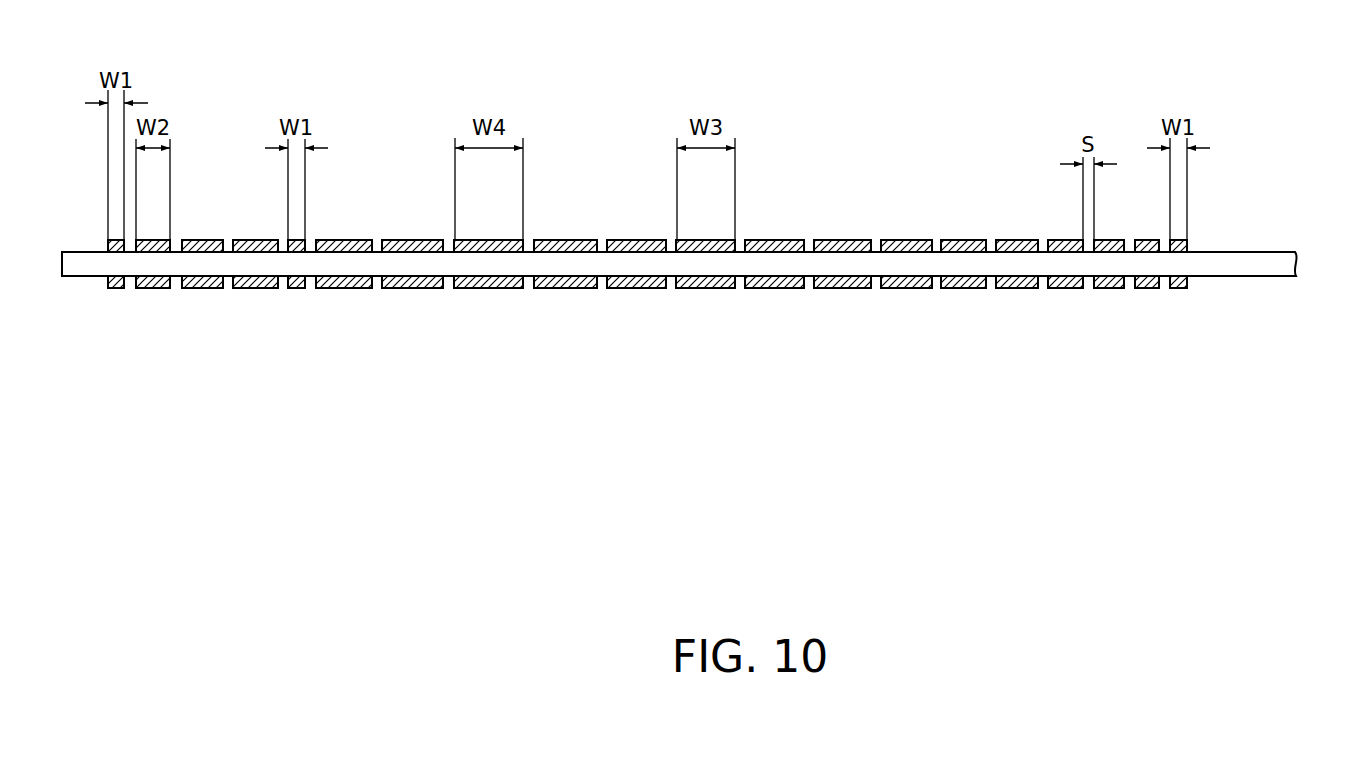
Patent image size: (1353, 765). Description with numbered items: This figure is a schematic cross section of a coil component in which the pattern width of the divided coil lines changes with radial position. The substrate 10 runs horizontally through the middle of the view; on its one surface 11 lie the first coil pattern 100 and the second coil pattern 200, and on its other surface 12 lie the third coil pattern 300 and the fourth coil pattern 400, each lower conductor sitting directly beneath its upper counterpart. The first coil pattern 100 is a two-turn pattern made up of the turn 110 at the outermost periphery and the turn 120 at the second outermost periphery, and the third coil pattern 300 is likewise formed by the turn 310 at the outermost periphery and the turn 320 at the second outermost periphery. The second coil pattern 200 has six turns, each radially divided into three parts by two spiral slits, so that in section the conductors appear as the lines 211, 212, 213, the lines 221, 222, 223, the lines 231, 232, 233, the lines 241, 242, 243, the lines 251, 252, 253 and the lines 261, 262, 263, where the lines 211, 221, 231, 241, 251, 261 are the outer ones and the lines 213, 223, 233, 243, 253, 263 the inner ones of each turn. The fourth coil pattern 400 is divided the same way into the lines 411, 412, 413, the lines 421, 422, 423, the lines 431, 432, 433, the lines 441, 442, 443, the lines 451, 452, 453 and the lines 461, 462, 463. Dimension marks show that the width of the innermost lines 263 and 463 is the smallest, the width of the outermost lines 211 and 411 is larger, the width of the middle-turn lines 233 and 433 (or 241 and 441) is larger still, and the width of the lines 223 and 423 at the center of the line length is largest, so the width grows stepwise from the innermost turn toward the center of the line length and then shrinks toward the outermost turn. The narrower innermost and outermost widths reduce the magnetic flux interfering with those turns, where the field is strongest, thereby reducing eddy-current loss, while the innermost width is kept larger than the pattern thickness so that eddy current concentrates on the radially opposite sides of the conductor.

The substrate 10 is at (1296, 264).
The one surface 11 is at (1268, 252).
The other surface 12 is at (1268, 276).
The first coil pattern 100 is at (647, 169).
The second coil pattern 200 is at (933, 163).
The third coil pattern 300 is at (646, 360).
The fourth coil pattern 400 is at (935, 365).
The turn 110 is at (117, 240).
The turn 120 is at (297, 240).
The line 211 is at (152, 240).
The line 212 is at (202, 240).
The line 213 is at (255, 240).
The line 221 is at (345, 240).
The line 222 is at (412, 240).
The line 223 is at (488, 240).
The line 231 is at (565, 240).
The line 232 is at (636, 240).
The line 233 is at (705, 240).
The line 241 is at (774, 240).
The line 242 is at (842, 240).
The line 243 is at (906, 240).
The line 251 is at (961, 240).
The line 252 is at (1017, 240).
The line 253 is at (1065, 240).
The line 261 is at (1109, 240).
The line 262 is at (1147, 240).
The line 263 is at (1178, 240).
The turn 310 is at (116, 288).
The turn 320 is at (297, 288).
The line 411 is at (153, 288).
The line 412 is at (203, 288).
The line 413 is at (254, 288).
The line 421 is at (344, 288).
The line 422 is at (412, 288).
The line 423 is at (488, 288).
The line 431 is at (565, 288).
The line 432 is at (637, 288).
The line 433 is at (705, 288).
The line 441 is at (773, 288).
The line 442 is at (842, 288).
The line 443 is at (906, 288).
The line 451 is at (962, 288).
The line 452 is at (1017, 288).
The line 453 is at (1065, 288).
The line 461 is at (1109, 288).
The line 462 is at (1147, 288).
The line 463 is at (1178, 288).